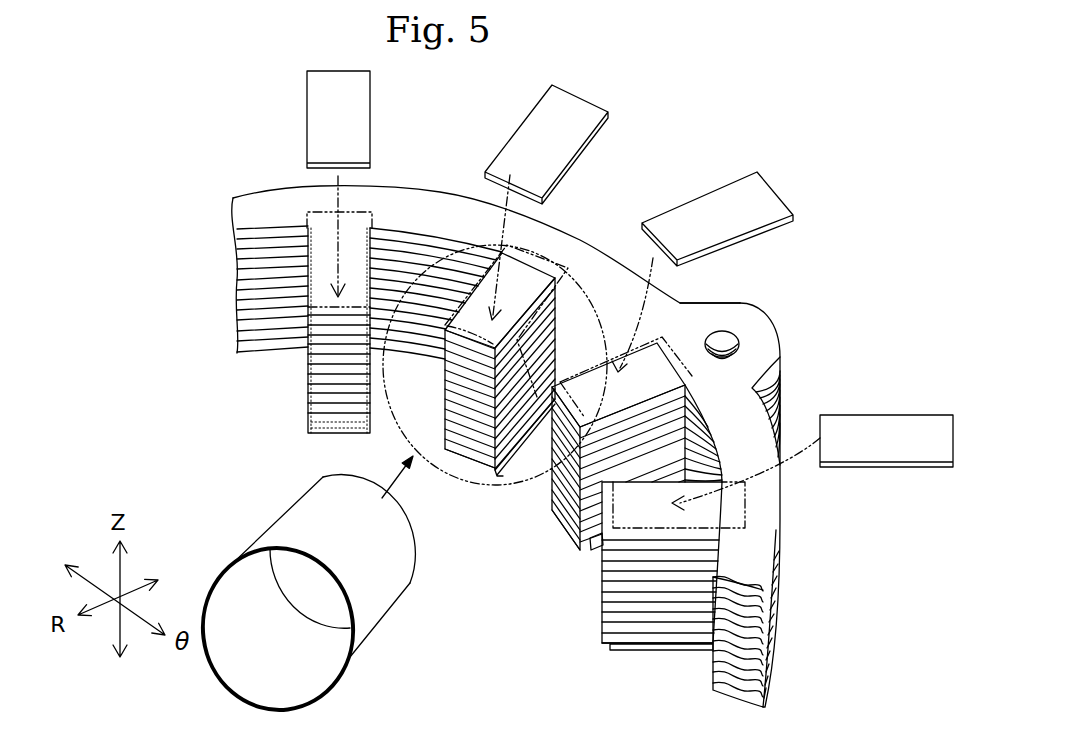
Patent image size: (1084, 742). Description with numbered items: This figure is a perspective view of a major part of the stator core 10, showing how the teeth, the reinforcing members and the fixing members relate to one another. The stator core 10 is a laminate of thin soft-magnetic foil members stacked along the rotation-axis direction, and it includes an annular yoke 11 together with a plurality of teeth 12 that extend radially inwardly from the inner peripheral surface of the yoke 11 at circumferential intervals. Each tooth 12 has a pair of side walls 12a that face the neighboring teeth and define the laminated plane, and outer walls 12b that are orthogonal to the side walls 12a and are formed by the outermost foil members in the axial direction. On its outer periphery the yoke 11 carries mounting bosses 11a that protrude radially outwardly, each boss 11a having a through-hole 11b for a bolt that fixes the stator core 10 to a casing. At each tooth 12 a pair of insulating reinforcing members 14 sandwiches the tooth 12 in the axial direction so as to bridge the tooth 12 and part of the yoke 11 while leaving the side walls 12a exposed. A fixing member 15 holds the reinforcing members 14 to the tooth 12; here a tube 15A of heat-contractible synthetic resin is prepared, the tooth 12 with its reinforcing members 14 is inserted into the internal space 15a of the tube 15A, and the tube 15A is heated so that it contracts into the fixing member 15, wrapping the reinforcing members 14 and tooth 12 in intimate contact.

The stator core 10 is at (220, 247).
The annular yoke 11 is at (755, 558).
The mounting boss 11a is at (752, 315).
The through-hole 11b is at (740, 344).
The tooth 12 is at (289, 395).
The side wall 12a is at (318, 342).
The outer wall 12b is at (327, 262).
The reinforcing member 14 is at (325, 100).
The fixing member 15 is at (452, 262).
The tube 15A is at (384, 650).
The internal space 15a is at (206, 633).